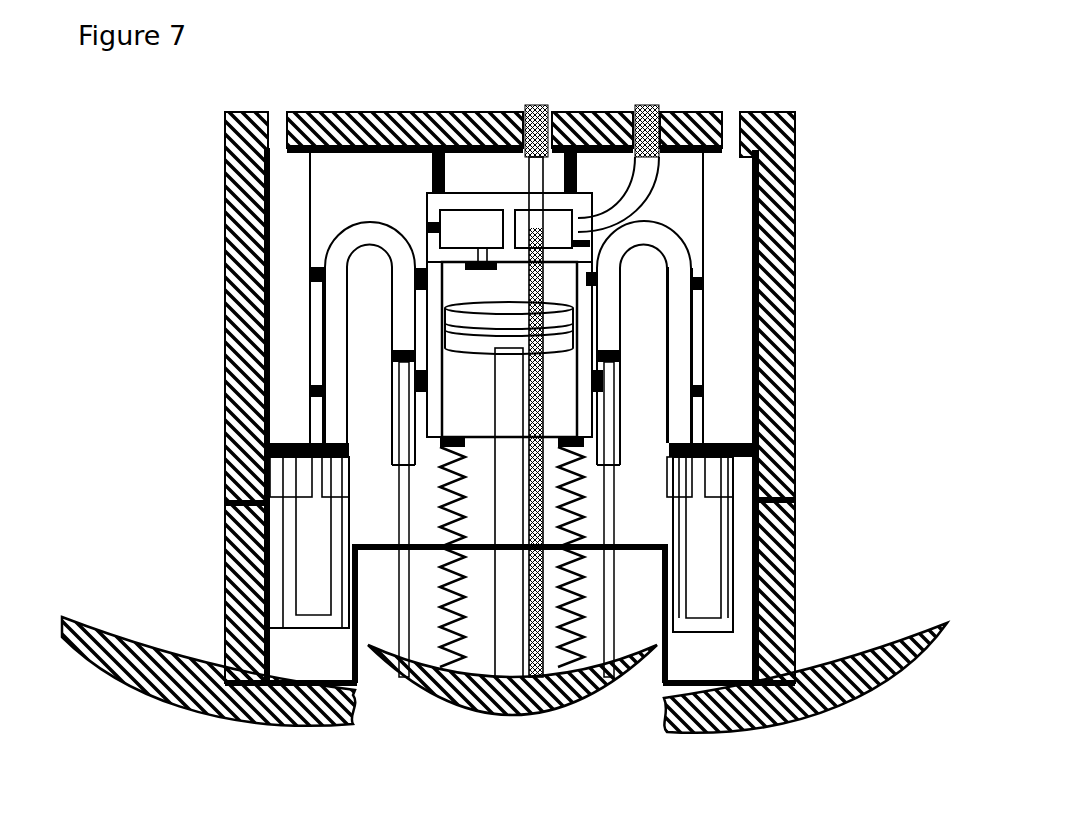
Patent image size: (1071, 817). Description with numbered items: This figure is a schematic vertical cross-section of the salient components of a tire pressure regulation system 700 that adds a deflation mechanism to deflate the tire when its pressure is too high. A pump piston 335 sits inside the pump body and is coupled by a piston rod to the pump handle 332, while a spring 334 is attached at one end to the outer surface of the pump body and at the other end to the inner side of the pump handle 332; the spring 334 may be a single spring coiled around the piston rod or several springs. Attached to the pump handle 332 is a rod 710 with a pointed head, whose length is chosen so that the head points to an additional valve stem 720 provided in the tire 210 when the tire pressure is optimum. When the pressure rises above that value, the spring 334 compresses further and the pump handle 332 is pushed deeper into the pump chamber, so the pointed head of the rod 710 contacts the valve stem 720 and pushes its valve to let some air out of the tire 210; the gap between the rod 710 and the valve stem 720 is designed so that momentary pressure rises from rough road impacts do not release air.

The tire pressure regulation system 700 is at (178, 162).
The rod 710 is at (527, 187).
The valve stem 720 is at (540, 103).
The pump piston 335 is at (565, 340).
The spring 334 is at (598, 534).
The pump handle 332 is at (385, 688).
The tire 210 is at (88, 607).